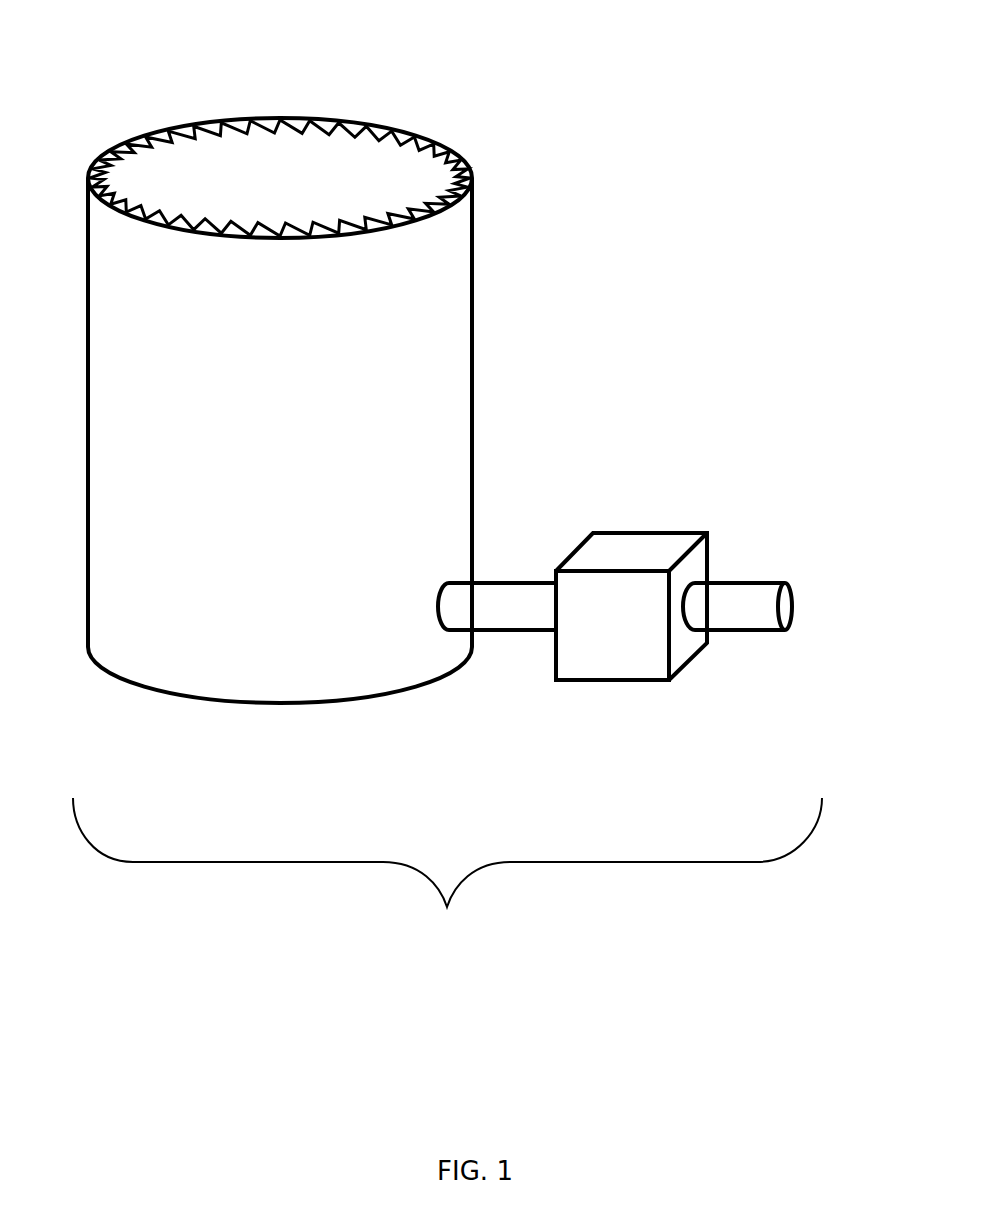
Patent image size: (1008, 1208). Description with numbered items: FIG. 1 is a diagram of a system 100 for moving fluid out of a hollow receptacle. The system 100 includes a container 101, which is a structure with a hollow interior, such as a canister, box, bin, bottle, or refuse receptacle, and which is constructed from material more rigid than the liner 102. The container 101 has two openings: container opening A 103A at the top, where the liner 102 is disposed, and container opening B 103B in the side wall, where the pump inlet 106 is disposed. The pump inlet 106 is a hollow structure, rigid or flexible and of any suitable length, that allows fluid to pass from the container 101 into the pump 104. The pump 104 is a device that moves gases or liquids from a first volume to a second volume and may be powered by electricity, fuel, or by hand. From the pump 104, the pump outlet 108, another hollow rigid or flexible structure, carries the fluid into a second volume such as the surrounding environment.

The system 100 is at (447, 907).
The container 101 is at (263, 437).
The liner 102 is at (263, 204).
The container opening A 103A is at (473, 167).
The container opening B 103B is at (445, 630).
The pump 104 is at (596, 652).
The pump inlet 106 is at (525, 613).
The pump outlet 108 is at (750, 610).